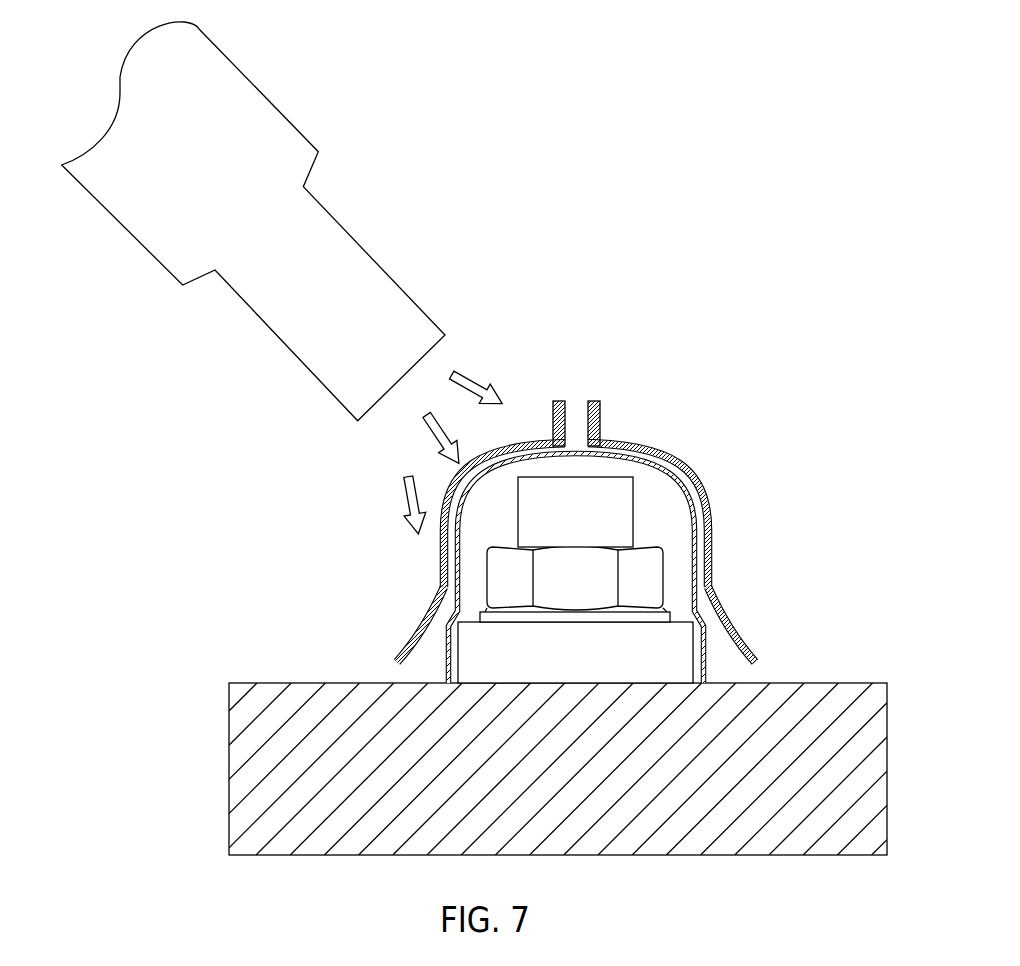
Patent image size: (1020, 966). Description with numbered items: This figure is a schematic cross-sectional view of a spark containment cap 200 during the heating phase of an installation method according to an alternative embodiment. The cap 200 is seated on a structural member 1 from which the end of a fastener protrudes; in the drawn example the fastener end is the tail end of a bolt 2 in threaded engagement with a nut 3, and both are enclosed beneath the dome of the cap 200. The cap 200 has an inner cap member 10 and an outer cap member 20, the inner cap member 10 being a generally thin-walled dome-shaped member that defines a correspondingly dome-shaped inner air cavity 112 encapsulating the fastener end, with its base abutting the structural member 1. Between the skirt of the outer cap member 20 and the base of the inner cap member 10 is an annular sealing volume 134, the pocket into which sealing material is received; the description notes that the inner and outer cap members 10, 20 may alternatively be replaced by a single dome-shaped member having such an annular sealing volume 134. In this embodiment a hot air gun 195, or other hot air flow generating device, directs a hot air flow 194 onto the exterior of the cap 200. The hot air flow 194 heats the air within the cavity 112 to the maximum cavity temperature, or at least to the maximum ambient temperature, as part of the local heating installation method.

The structural member 1 is at (315, 683).
The bolt 2 is at (530, 512).
The nut 3 is at (507, 590).
The inner cap member 10 is at (577, 540).
The outer cap member 20 is at (670, 462).
The inner air cavity 112 is at (680, 532).
The annular sealing volume 134 is at (743, 678).
The hot air flow 194 is at (468, 378).
The hot air gun 195 is at (281, 112).
The cap 200 is at (628, 540).